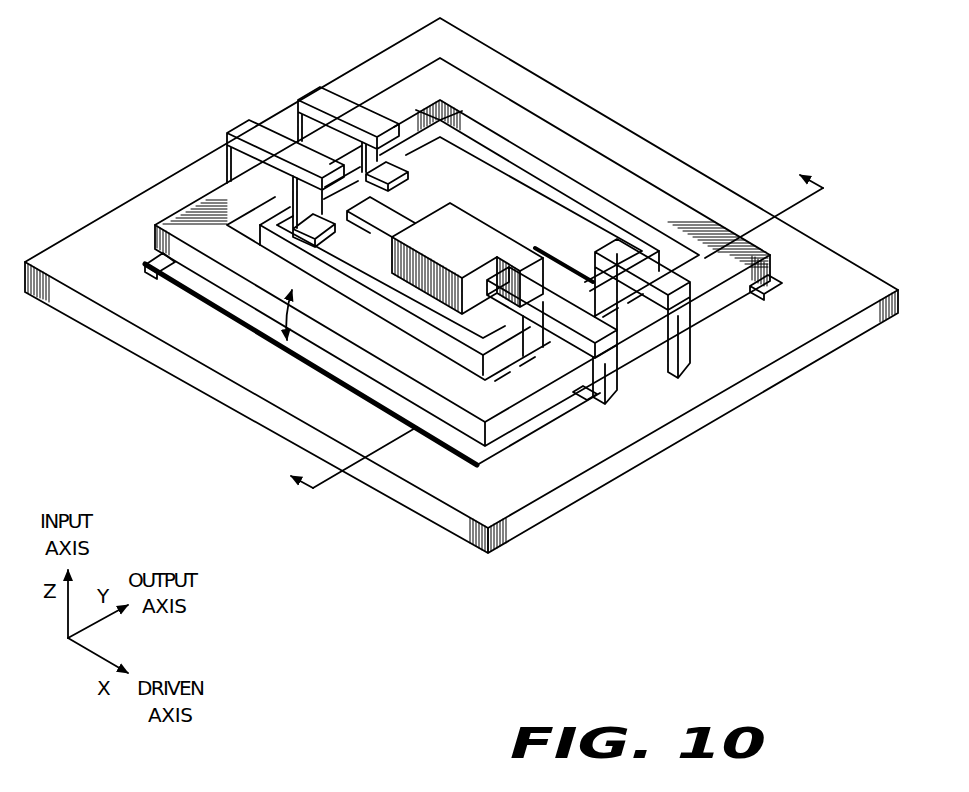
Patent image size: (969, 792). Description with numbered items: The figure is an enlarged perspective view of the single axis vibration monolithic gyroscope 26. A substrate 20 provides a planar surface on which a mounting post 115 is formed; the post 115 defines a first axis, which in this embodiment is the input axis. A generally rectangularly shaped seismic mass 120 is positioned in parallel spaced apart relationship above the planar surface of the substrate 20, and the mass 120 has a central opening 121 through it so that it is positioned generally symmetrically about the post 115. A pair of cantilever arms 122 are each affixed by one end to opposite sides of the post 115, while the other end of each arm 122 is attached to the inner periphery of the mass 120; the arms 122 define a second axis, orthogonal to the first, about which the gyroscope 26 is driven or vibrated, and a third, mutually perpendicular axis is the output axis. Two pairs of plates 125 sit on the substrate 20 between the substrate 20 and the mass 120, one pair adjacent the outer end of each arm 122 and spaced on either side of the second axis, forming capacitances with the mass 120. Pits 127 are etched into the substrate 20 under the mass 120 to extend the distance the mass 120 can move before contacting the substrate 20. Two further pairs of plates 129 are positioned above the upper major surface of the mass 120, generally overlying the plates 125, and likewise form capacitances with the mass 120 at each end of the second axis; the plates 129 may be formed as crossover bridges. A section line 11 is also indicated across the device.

The section line 11- 11 is at (544, 320).
The substrate 20 is at (412, 257).
The vibration monolithic gyroscope 26 is at (670, 622).
The mounting post 115 is at (493, 227).
The seismic mass 120 is at (657, 200).
The central opening 121 is at (458, 140).
The cantilever arms 122 is at (540, 278).
The plates 125 is at (580, 393).
The pits 127 is at (158, 262).
The plates 129 is at (321, 97).